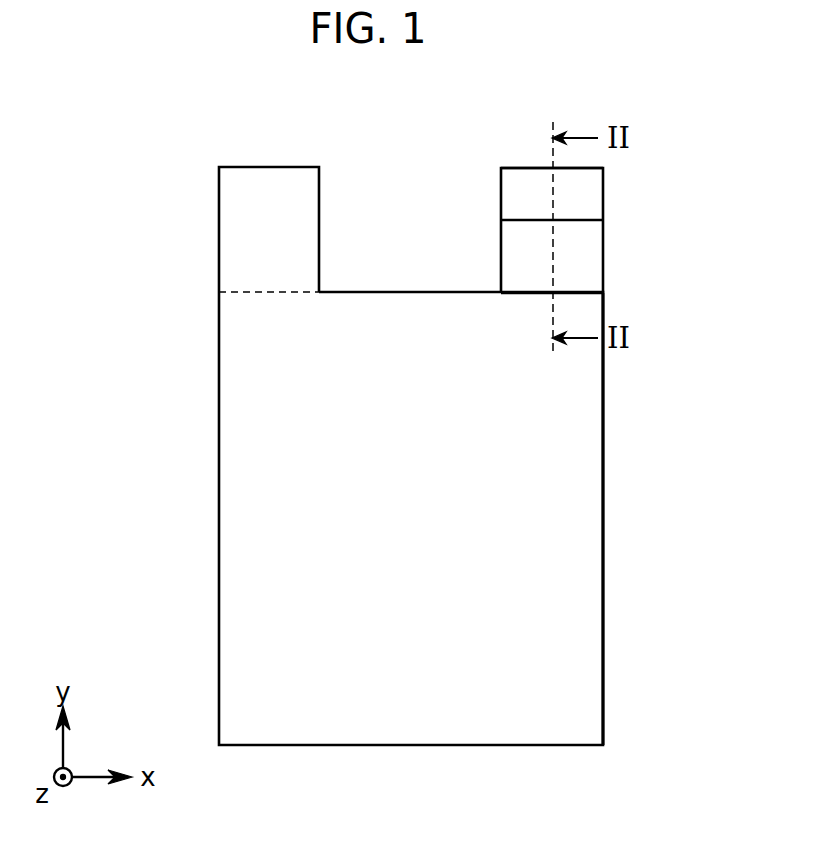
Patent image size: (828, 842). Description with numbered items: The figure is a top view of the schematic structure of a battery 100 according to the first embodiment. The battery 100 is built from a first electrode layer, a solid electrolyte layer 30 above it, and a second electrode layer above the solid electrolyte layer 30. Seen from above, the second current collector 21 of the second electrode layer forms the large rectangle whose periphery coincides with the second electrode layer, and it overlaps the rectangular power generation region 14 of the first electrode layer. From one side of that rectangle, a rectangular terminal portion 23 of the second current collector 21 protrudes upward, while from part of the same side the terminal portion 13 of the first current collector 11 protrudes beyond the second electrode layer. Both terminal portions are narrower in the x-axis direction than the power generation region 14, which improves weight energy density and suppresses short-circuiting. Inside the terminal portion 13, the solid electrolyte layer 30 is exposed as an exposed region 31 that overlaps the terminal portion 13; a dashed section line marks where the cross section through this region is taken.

The battery 100 is at (187, 160).
The second current collector 21 is at (218, 443).
The terminal portion 23 is at (218, 167).
The terminal portion 13 is at (606, 168).
The first current collector 11 is at (501, 190).
The exposed region 31 is at (527, 247).
The solid electrolyte layer 30 is at (501, 275).
The power generation region 14 is at (582, 563).